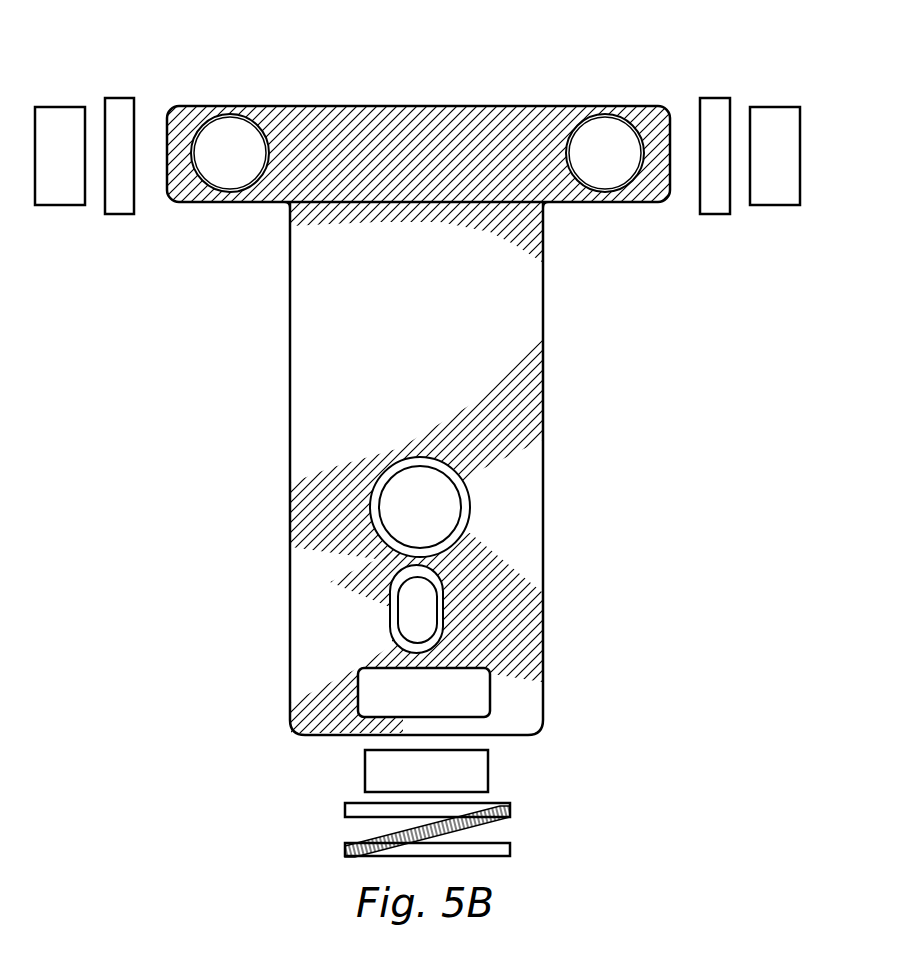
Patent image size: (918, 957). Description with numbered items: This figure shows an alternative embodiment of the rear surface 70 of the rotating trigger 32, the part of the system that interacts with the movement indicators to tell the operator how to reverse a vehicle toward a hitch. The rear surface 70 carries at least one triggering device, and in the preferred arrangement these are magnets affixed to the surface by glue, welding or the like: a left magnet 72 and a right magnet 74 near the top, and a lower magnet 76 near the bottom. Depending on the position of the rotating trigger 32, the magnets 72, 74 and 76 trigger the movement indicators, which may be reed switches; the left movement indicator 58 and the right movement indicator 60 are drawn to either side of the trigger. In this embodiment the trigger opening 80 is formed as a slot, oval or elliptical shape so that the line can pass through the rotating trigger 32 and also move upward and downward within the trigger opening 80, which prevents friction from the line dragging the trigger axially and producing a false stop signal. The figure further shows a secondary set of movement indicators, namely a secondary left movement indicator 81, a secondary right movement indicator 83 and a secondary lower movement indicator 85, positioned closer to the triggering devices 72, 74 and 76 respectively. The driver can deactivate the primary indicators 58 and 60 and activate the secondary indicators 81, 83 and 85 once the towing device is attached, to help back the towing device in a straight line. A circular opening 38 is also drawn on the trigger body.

The rotating trigger 32 is at (272, 410).
The rear surface 70 is at (510, 412).
The left magnet 72 is at (232, 165).
The right magnet 74 is at (604, 172).
The aperture 38 is at (407, 515).
The trigger opening 80 is at (393, 593).
The lower magnet 76 is at (490, 697).
The secondary lower movement indicator 85 is at (365, 768).
The left movement indicator 58 is at (58, 108).
The right movement indicator 60 is at (773, 115).
The secondary left movement indicator 81 is at (127, 98).
The secondary right movement indicator 83 is at (712, 98).